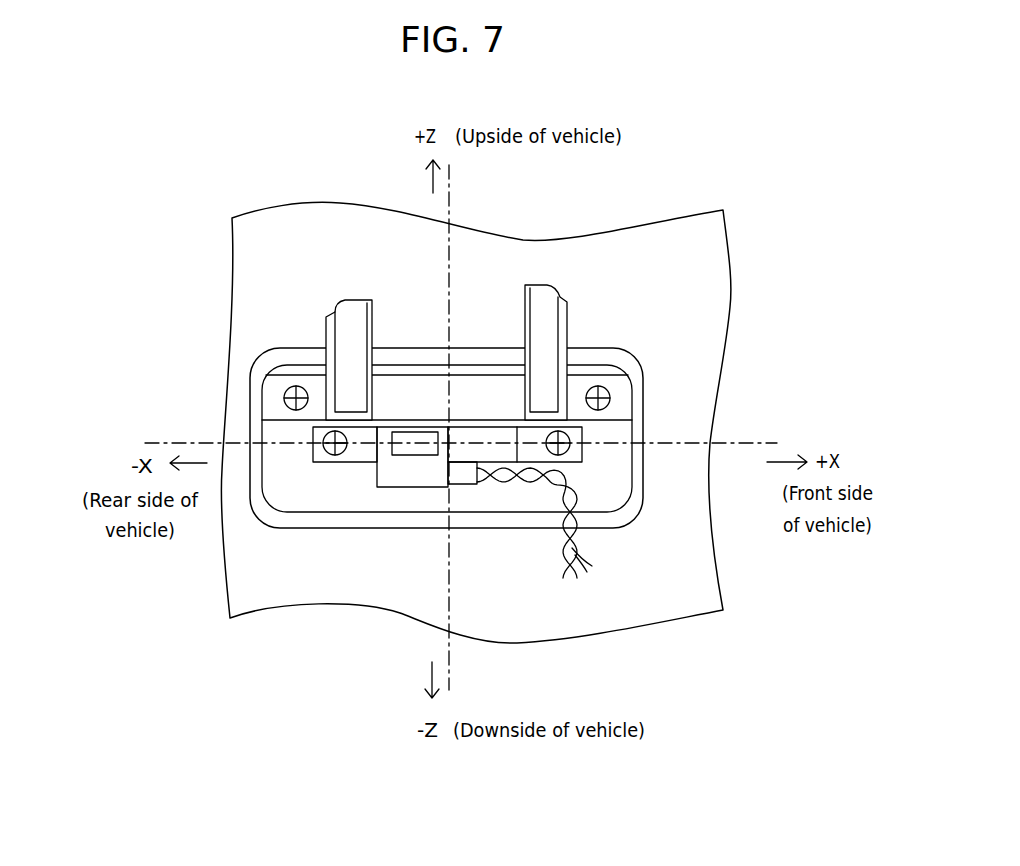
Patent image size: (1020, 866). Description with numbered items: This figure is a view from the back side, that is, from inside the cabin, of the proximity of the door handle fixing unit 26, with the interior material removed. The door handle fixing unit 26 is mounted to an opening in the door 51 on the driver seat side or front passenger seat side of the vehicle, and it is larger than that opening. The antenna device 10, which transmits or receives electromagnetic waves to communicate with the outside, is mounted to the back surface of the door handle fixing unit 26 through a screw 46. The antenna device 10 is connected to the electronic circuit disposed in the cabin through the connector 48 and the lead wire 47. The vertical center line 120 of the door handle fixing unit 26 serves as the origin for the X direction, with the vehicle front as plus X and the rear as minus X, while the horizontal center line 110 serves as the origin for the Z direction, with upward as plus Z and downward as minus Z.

The antenna device 10 is at (543, 455).
The door handle fixing unit 26 is at (602, 495).
The screw 46 is at (565, 435).
The lead wire 47 is at (590, 553).
The connector 48 is at (463, 478).
The door 51 is at (717, 262).
The horizontal center line 110 is at (722, 445).
The vertical center line 120 is at (450, 253).